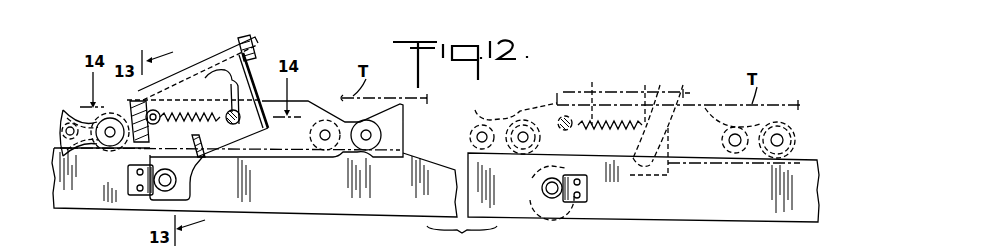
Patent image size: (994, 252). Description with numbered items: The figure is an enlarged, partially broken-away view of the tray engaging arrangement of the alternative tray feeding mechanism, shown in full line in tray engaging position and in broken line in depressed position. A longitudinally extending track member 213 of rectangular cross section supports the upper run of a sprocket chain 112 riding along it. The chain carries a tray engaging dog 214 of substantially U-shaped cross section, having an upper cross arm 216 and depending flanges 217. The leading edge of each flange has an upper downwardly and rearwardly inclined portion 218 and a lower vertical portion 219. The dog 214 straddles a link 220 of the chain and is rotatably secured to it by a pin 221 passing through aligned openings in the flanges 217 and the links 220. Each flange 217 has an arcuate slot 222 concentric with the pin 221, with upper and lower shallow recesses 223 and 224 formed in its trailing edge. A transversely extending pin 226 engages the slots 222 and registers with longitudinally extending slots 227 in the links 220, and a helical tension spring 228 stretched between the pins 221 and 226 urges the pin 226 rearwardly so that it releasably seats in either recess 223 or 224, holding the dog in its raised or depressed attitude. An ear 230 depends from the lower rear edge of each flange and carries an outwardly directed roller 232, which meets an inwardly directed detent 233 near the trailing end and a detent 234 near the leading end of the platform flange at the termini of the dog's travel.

The sprocket chain 112 is at (297, 101).
The track member 213 is at (434, 166).
The tray engaging dog 214 is at (213, 44).
The upper cross arm 216 is at (181, 70).
The depending flange 217 is at (241, 42).
The upper inclined portion 218 is at (250, 58).
The lower vertical portion 219 is at (262, 93).
The link 220 is at (265, 143).
The pin 221 is at (134, 100).
The arcuate slot 222 is at (222, 100).
The upper recess 223 is at (212, 80).
The lower recess 224 is at (230, 124).
The transversely extending pin 226 is at (220, 116).
The longitudinally extending slot 227 is at (262, 130).
The helical tension spring 228 is at (191, 128).
The ear 230 is at (183, 199).
The roller 232 is at (172, 180).
The detent 233 is at (128, 179).
The detent 234 is at (587, 188).